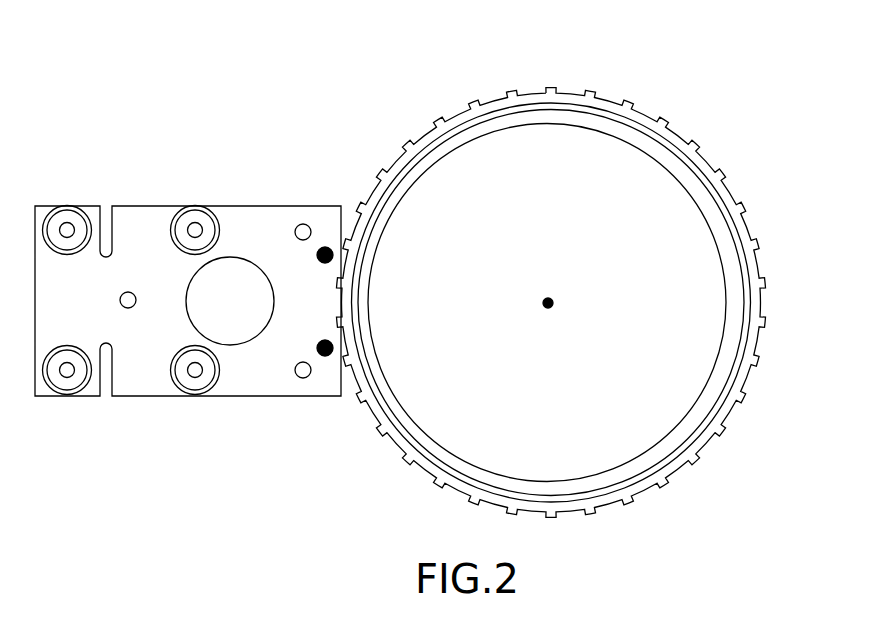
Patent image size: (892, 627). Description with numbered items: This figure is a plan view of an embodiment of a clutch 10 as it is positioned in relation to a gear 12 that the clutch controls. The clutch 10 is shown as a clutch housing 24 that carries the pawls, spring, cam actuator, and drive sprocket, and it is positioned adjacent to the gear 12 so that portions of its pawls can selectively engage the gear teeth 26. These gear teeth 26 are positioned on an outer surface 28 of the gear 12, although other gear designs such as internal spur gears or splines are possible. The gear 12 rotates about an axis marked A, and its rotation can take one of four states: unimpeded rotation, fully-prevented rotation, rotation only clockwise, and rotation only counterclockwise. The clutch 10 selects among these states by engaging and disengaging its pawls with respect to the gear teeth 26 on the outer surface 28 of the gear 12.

The clutch 10 is at (188, 311).
The gear 12 is at (565, 125).
The clutch housing 24 is at (150, 206).
The gear teeth 26 is at (722, 168).
The outer surface 28 is at (427, 127).